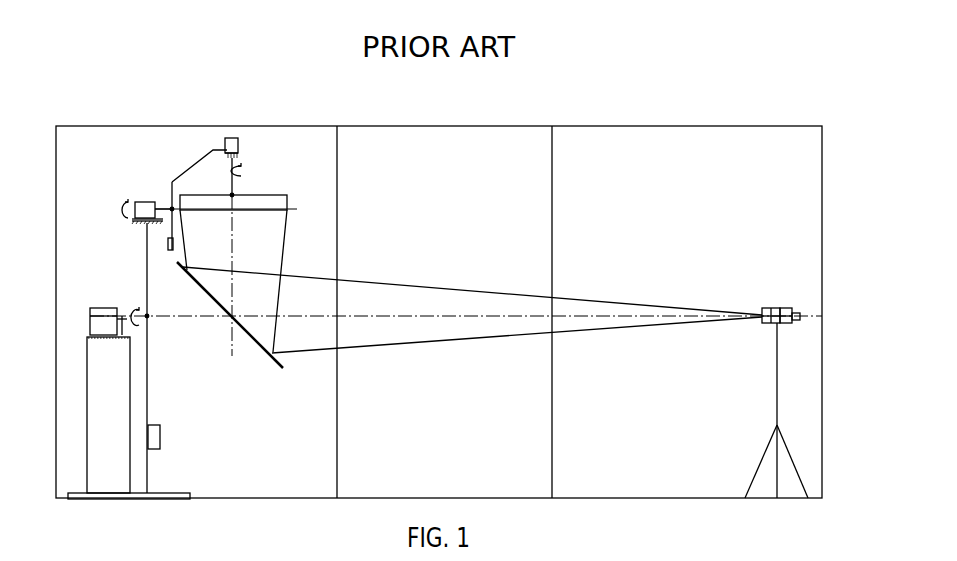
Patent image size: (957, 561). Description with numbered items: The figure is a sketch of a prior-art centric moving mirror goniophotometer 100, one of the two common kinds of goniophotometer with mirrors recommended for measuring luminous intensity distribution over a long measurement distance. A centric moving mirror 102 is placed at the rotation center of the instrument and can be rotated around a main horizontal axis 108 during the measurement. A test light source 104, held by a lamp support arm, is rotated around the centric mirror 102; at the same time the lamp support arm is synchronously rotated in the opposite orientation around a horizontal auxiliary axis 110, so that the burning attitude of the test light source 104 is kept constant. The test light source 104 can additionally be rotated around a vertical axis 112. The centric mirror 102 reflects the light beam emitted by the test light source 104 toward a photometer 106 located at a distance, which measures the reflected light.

The centric moving mirror goniophotometer 100 is at (438, 126).
The centric moving mirror 102 is at (264, 349).
The test light source 104 is at (262, 210).
The photometer 106 is at (790, 308).
The main horizontal axis 108 is at (128, 313).
The horizontal auxiliary axis 110 is at (172, 209).
The vertical axis 112 is at (235, 180).